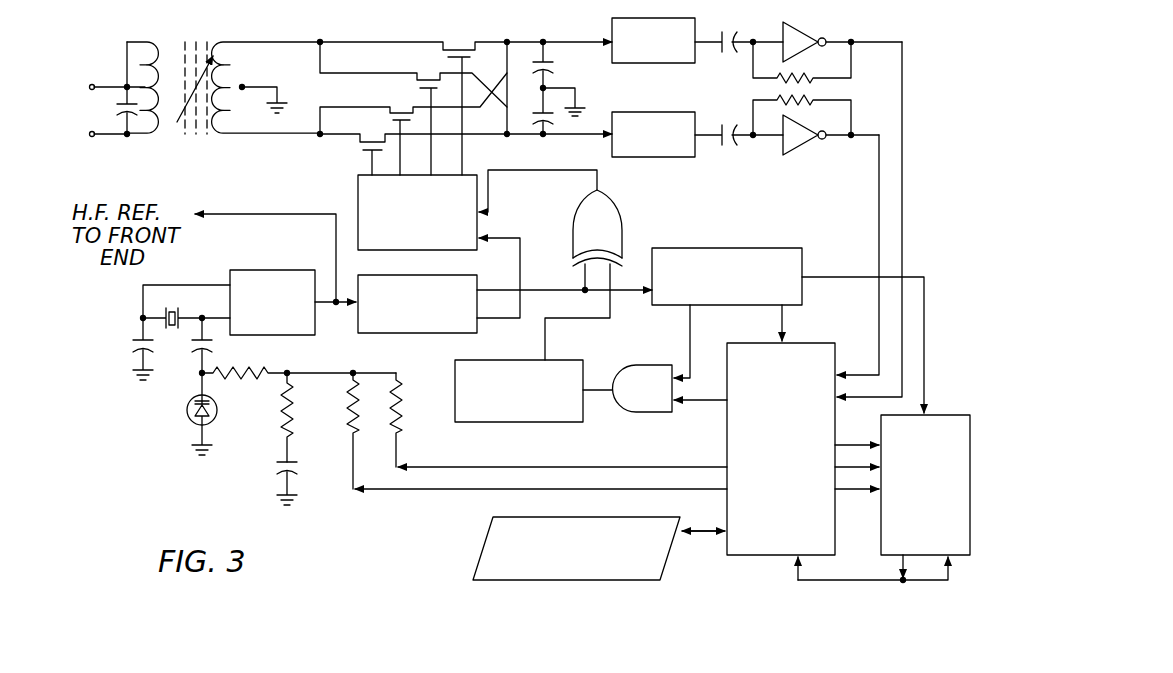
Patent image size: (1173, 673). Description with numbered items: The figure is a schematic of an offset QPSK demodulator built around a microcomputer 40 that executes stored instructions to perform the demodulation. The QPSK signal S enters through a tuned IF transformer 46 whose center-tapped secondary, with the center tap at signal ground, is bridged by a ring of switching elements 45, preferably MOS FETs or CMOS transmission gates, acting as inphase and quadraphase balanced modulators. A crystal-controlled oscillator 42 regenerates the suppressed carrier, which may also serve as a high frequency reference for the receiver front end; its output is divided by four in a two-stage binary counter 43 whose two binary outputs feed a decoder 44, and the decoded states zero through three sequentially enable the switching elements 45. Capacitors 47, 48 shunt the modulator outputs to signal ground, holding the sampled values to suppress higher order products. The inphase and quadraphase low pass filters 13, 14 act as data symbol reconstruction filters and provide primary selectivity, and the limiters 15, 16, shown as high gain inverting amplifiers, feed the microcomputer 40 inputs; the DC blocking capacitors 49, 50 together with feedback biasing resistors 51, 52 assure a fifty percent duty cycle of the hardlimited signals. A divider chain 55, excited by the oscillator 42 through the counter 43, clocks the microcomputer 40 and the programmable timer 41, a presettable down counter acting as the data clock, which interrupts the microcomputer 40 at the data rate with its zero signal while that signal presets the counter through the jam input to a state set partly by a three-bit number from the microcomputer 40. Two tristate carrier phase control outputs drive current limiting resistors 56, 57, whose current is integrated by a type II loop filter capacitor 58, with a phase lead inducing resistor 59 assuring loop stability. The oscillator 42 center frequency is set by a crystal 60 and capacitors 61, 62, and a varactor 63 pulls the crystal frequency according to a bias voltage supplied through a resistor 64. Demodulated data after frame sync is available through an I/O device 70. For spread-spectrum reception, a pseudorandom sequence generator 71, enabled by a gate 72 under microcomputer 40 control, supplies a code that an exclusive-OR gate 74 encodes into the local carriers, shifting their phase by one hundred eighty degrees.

The inphase low pass filter 13 is at (635, 157).
The quadraphase low pass filter 14 is at (633, 63).
The limiter 15 is at (800, 152).
The limiter 16 is at (795, 26).
The microcomputer 40 is at (803, 342).
The programmable timer 41 is at (972, 413).
The crystal-controlled oscillator 42 is at (297, 269).
The two-stage binary counter 43 is at (394, 342).
The decoder 44 is at (358, 203).
The switching elements 45 is at (458, 34).
The tuned IF transformer 46 is at (172, 144).
The capacitor 47 is at (556, 122).
The capacitor 48 is at (553, 66).
The DC blocking capacitor 49 is at (718, 146).
The DC blocking capacitor 50 is at (718, 53).
The feedback biasing resistor 51 is at (805, 103).
The feedback biasing resistor 52 is at (804, 78).
The divider chain 55 is at (689, 246).
The current limiting resistor 56 is at (350, 410).
The current limiting resistor 57 is at (400, 428).
The loop filter capacitor 58 is at (278, 476).
The phase lead inducing resistor 59 is at (281, 420).
The crystal 60 is at (178, 309).
The capacitor 61 is at (135, 350).
The capacitor 62 is at (212, 351).
The varactor 63 is at (186, 415).
The resistor 64 is at (236, 378).
The I/O device 70 is at (478, 553).
The pseudorandom sequence generator 71 is at (510, 422).
The gate 72 is at (640, 412).
The exclusive-OR gate 74 is at (576, 217).